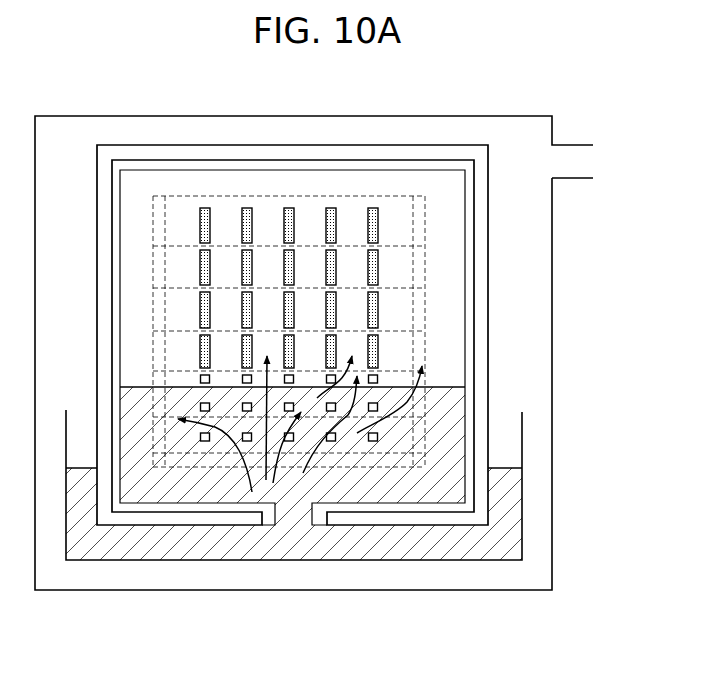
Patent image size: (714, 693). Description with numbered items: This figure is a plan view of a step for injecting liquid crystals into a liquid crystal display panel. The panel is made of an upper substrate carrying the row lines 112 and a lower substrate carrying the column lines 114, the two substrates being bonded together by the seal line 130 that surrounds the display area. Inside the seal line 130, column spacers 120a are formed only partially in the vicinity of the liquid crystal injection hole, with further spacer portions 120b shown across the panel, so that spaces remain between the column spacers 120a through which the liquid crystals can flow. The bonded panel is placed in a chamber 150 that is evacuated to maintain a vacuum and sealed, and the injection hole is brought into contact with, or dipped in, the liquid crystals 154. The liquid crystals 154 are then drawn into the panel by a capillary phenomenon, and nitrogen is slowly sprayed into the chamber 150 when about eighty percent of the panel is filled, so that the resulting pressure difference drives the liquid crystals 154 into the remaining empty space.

The row lines 112 is at (425, 226).
The column lines 114 is at (395, 192).
The column spacers 120a is at (377, 407).
The heat exchange fins 120b is at (377, 308).
The seal line 130 is at (475, 263).
The chamber 150 is at (295, 590).
The liquid crystals 154 is at (452, 437).